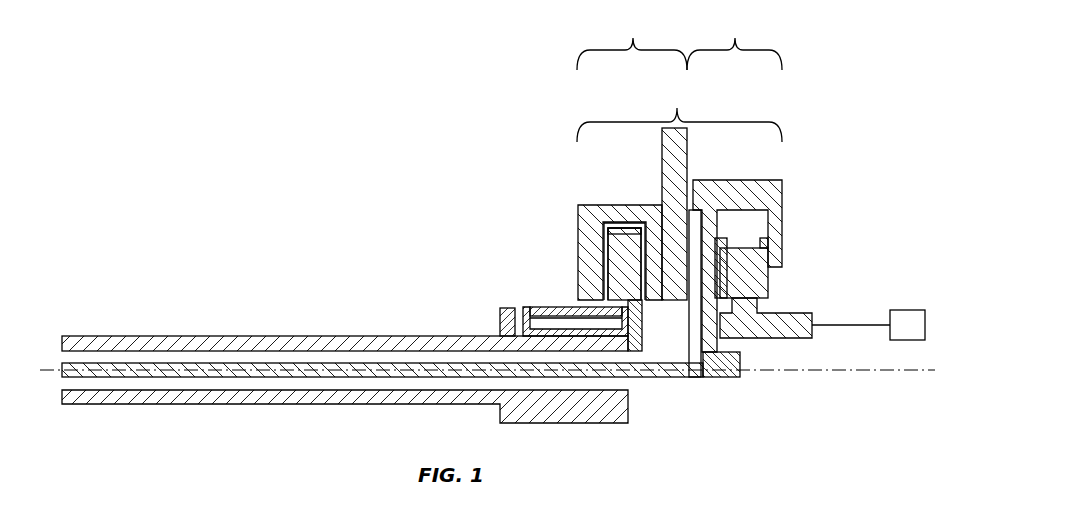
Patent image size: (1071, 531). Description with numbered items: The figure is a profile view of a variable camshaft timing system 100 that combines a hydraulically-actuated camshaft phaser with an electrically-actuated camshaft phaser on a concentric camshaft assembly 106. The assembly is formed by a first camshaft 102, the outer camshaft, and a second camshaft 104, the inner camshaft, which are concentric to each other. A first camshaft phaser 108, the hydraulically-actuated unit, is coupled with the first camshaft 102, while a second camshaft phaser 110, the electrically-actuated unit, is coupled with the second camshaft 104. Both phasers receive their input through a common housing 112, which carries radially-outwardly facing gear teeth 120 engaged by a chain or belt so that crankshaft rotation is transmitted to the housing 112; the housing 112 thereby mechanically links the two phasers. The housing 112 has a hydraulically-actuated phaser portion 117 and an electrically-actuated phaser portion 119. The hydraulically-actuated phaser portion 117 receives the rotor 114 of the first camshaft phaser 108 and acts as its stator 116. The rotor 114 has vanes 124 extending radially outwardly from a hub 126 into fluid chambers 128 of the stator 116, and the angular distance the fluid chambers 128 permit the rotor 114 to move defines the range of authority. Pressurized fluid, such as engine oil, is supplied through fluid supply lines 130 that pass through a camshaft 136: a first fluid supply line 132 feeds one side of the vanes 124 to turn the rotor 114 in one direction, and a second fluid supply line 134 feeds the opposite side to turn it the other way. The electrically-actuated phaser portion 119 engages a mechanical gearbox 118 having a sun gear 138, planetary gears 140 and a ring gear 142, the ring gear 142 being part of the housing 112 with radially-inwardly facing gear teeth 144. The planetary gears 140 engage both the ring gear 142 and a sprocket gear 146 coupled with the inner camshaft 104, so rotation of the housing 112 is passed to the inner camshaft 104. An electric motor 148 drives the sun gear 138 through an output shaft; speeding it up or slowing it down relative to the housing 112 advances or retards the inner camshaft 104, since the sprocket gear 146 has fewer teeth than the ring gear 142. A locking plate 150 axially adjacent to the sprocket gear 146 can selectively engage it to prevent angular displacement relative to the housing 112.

The variable camshaft timing system 100 is at (822, 72).
The first camshaft 102 is at (153, 337).
The second camshaft 104 is at (58, 362).
The concentric camshaft assembly 106 is at (248, 322).
The first camshaft phaser 108 is at (580, 203).
The second camshaft phaser 110 is at (786, 177).
The housing 112 is at (679, 110).
The rotor 114 is at (617, 256).
The stator 116 is at (582, 287).
The hydraulically-actuated phaser portion 117 is at (632, 39).
The mechanical gearbox 118 is at (780, 362).
The electrically-actuated phaser portion 119 is at (734, 39).
The gear teeth 120 is at (686, 130).
The vanes 124 is at (634, 252).
The hub 126 is at (633, 340).
The fluid chambers 128 is at (612, 233).
The fluid supply lines 130 is at (497, 304).
The first fluid supply line 132 is at (522, 333).
The second fluid supply line 134 is at (533, 306).
The camshaft 136 is at (272, 404).
The sun gear 138 is at (825, 327).
The planetary gears 140 is at (768, 284).
The ring gear 142 is at (766, 262).
The gear teeth 144 is at (735, 282).
The sprocket gear 146 is at (733, 242).
The electric motor 148 is at (908, 310).
The locking plate 150 is at (691, 272).